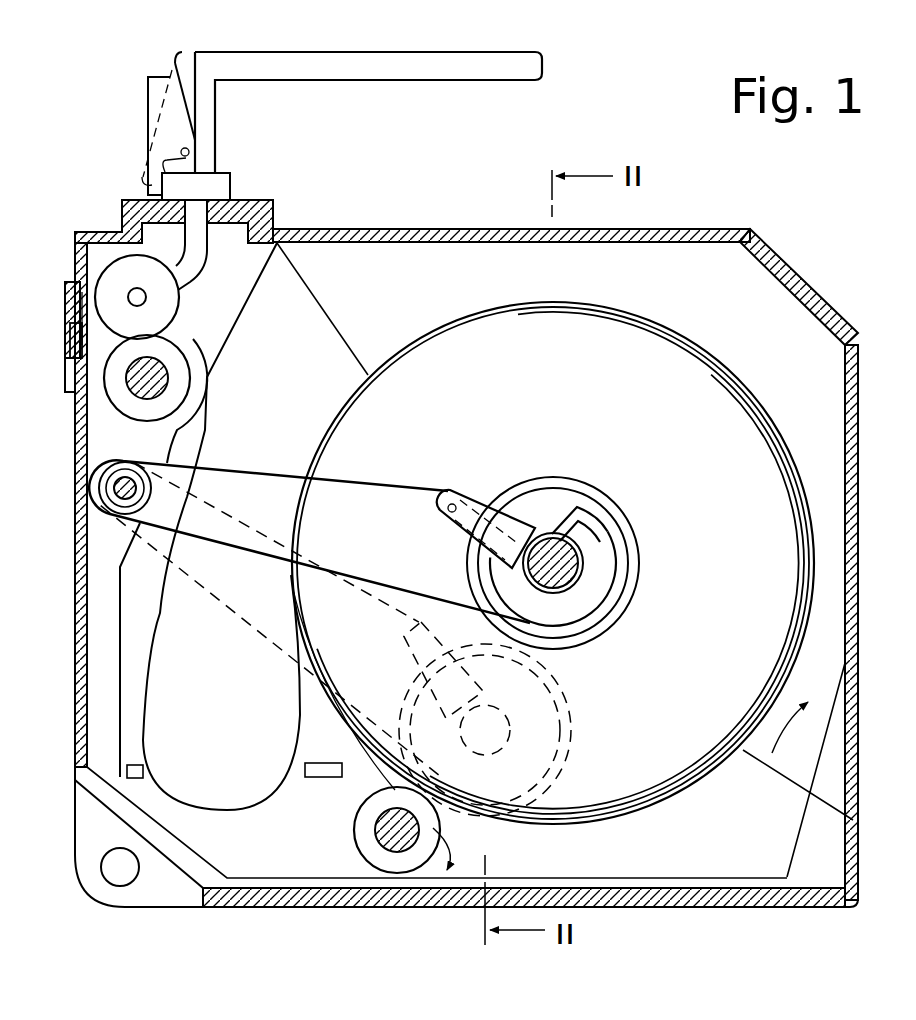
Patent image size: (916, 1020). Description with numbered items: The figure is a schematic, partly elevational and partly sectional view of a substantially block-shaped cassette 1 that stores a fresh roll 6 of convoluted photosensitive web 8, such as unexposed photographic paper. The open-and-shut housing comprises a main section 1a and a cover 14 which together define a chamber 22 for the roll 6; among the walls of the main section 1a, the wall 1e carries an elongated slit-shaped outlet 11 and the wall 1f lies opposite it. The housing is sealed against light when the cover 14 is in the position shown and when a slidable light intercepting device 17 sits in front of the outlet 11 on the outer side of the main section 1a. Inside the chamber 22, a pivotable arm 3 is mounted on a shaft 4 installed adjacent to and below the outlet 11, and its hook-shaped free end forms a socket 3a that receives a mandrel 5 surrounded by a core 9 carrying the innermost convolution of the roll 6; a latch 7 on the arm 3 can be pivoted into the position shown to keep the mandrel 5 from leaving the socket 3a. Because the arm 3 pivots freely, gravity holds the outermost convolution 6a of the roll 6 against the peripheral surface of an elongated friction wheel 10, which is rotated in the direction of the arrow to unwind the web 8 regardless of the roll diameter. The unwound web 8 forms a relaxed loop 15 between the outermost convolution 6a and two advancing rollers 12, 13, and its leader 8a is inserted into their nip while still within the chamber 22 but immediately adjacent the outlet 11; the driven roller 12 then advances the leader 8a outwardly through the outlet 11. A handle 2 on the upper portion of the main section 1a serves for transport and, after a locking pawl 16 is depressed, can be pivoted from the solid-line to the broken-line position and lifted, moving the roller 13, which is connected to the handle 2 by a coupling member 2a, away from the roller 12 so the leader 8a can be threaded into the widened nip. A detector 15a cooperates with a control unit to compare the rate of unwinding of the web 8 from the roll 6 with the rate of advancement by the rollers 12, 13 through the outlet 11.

The cassette 1 is at (830, 262).
The main section 1a is at (112, 806).
The wall 1e is at (82, 600).
The wall 1f is at (856, 545).
The handle 2 is at (385, 70).
The coupling member 2a is at (0, 315).
The pivotable arm 3 is at (385, 490).
The socket 3a is at (585, 524).
The shaft 4 is at (110, 487).
The mandrel 5 is at (578, 562).
The roll 6 is at (703, 378).
The outermost convolution 6a is at (617, 822).
The latch 7 is at (517, 530).
The web 8 is at (209, 430).
The leader 8a is at (100, 342).
The core 9 is at (563, 495).
The friction wheel 10 is at (368, 843).
The outlet 11 is at (68, 348).
The advancing roller 12 is at (130, 390).
The advancing roller 13 is at (123, 277).
The cover 14 is at (663, 233).
The loop 15 is at (147, 741).
The detector 15a is at (330, 780).
The locking pawl 16 is at (153, 87).
The light intercepting device 17 is at (62, 281).
The chamber 22 is at (406, 293).